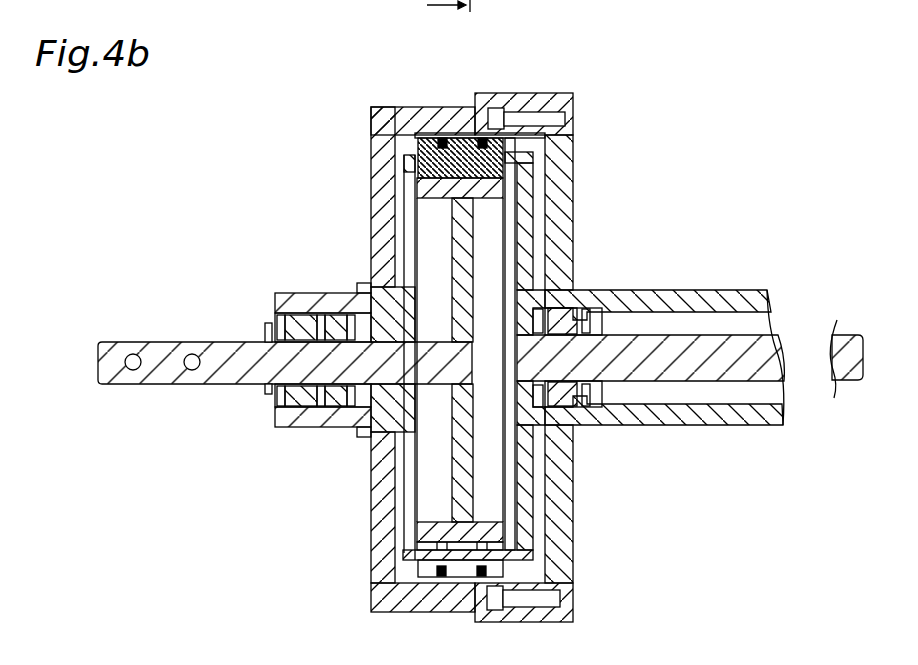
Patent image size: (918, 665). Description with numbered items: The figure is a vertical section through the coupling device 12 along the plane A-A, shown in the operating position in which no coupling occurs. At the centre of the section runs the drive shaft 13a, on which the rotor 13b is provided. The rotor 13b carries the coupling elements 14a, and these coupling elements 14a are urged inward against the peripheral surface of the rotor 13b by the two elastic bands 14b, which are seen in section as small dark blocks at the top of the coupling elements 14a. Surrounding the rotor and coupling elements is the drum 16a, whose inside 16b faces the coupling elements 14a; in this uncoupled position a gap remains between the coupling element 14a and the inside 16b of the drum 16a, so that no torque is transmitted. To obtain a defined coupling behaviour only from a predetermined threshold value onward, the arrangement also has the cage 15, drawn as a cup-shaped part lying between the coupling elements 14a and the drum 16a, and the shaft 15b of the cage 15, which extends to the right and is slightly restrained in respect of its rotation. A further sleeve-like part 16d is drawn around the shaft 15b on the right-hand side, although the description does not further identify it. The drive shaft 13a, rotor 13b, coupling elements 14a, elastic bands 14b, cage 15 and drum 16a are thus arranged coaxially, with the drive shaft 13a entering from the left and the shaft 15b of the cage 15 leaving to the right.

The magnetic coupling device 12 is at (220, 242).
The drive shaft 13a is at (176, 370).
The rotor 13b is at (420, 188).
The coupling elements 14a is at (418, 152).
The elastic bands 14b is at (480, 137).
The cage 15 is at (527, 257).
The shaft 15b is at (695, 370).
The drum 16a is at (482, 132).
The inside of the drum 16b is at (506, 139).
The bearing sleeve 16d is at (728, 298).